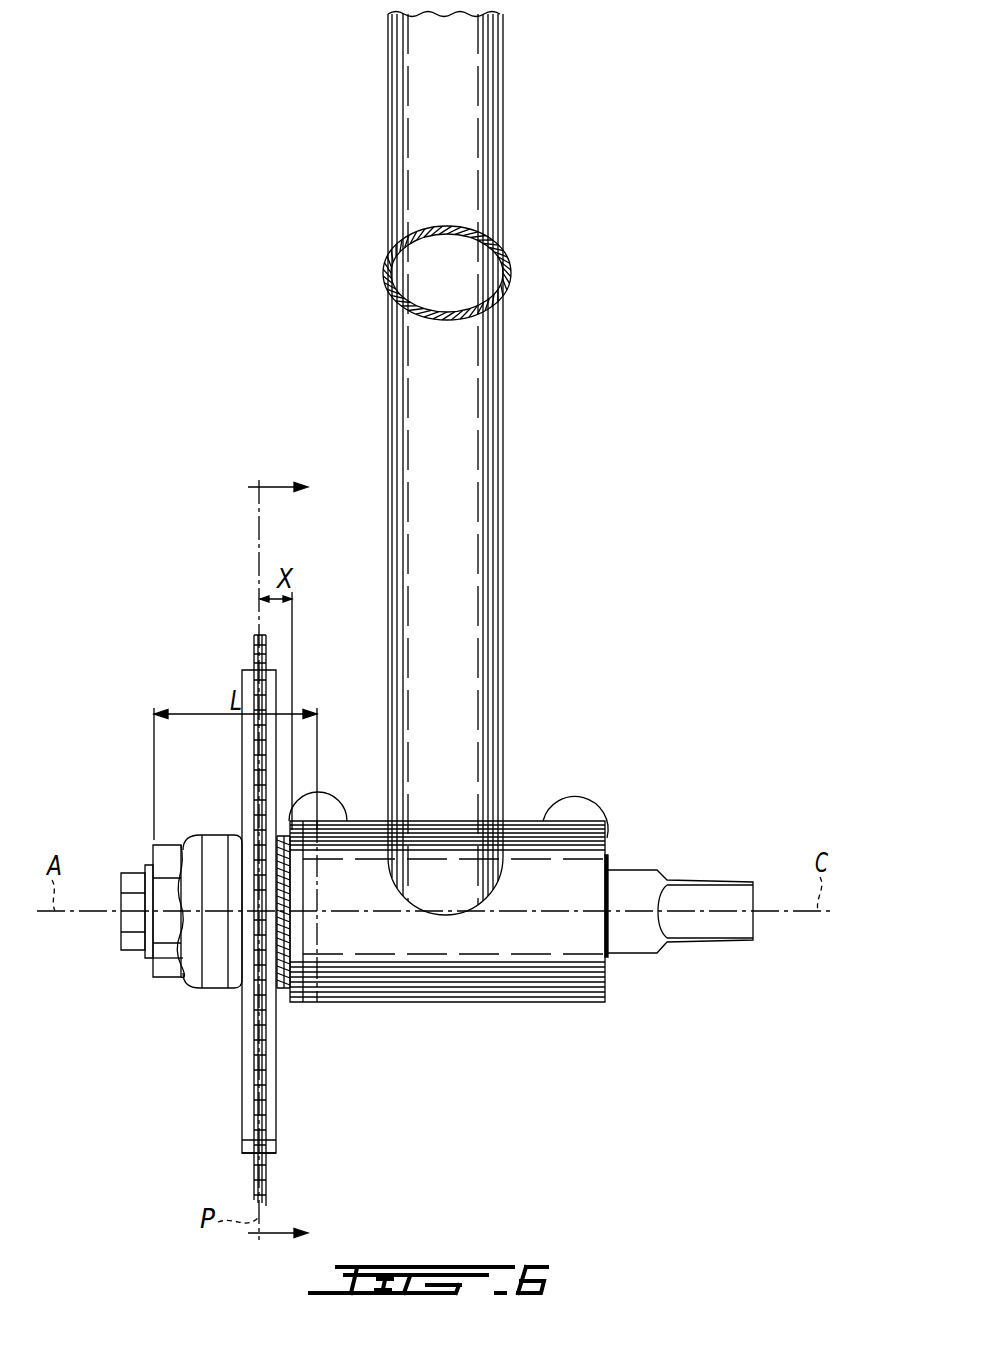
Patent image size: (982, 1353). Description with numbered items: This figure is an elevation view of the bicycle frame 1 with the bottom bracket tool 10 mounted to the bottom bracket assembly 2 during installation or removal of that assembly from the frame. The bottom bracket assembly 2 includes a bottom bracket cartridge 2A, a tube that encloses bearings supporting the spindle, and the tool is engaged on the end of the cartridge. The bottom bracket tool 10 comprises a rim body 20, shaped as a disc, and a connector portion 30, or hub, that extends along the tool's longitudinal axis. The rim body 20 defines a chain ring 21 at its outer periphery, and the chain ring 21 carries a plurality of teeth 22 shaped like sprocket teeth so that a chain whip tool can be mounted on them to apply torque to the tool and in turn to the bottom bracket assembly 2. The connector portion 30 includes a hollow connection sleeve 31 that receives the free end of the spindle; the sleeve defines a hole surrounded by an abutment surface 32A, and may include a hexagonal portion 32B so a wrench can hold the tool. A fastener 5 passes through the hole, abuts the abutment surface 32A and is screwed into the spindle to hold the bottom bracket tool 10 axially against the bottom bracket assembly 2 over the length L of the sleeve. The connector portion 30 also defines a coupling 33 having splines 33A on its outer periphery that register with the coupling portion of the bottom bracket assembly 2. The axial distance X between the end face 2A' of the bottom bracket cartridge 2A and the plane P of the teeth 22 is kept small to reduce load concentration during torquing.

The bicycle frame 1 is at (440, 117).
The bottom bracket assembly 2 is at (650, 967).
The bottom bracket cartridge 2A is at (390, 932).
The end face of the bottom bracket cartridge 2A' is at (330, 783).
The fastener 5 is at (125, 900).
The bottom bracket tool 10 is at (188, 667).
The rim body 20 is at (242, 1118).
The chain ring 21 is at (247, 627).
The teeth 22 is at (270, 1058).
The connector portion 30 is at (183, 827).
The connection sleeve 31 is at (197, 968).
The abutment surface 32A is at (170, 965).
The hexagonal portion 32B is at (166, 978).
The coupling 33 is at (283, 990).
The splines 33A is at (280, 940).